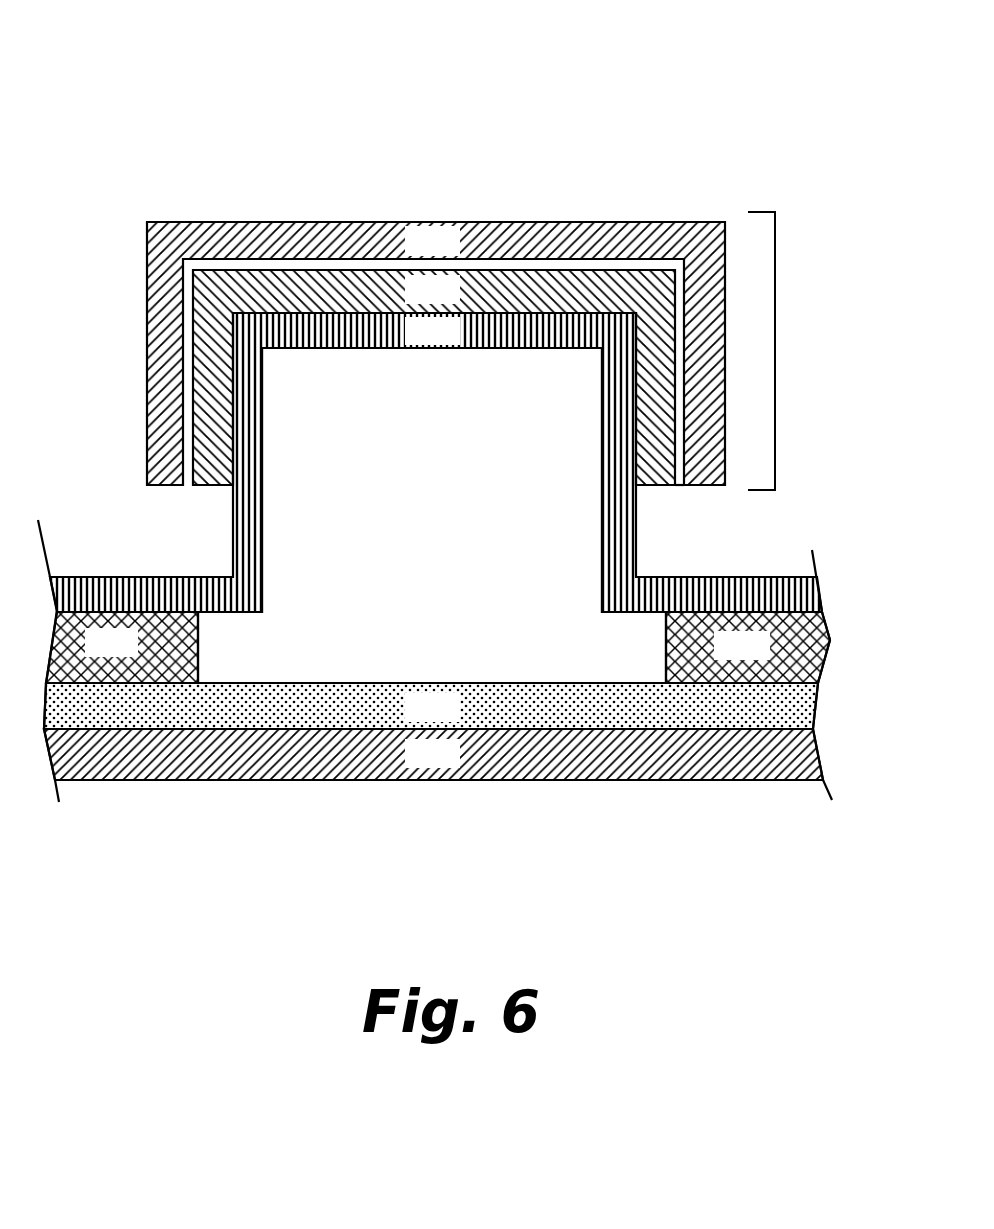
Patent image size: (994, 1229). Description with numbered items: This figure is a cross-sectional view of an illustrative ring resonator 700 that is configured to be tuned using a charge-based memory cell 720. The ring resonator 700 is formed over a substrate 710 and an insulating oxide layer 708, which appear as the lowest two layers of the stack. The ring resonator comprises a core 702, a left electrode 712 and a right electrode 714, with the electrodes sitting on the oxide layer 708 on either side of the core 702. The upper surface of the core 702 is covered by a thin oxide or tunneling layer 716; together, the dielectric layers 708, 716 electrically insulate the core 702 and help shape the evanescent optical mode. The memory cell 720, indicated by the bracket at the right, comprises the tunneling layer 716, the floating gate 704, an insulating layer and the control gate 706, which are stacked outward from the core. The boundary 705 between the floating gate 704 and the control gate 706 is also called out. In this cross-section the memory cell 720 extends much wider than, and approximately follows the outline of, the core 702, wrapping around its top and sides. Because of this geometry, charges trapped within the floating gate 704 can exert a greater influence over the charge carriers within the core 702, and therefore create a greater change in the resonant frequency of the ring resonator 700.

The ring resonator 700 is at (141, 102).
The core 702 is at (450, 551).
The floating gate 704 is at (454, 302).
The interface between gate layers 705 is at (678, 485).
The control gate 706 is at (454, 253).
The insulating oxide layer 708 is at (454, 721).
The substrate 710 is at (454, 767).
The left electrode 712 is at (132, 656).
The right electrode 714 is at (762, 659).
The tunneling layer 716 is at (454, 344).
The charge-based memory cell 720 is at (776, 335).